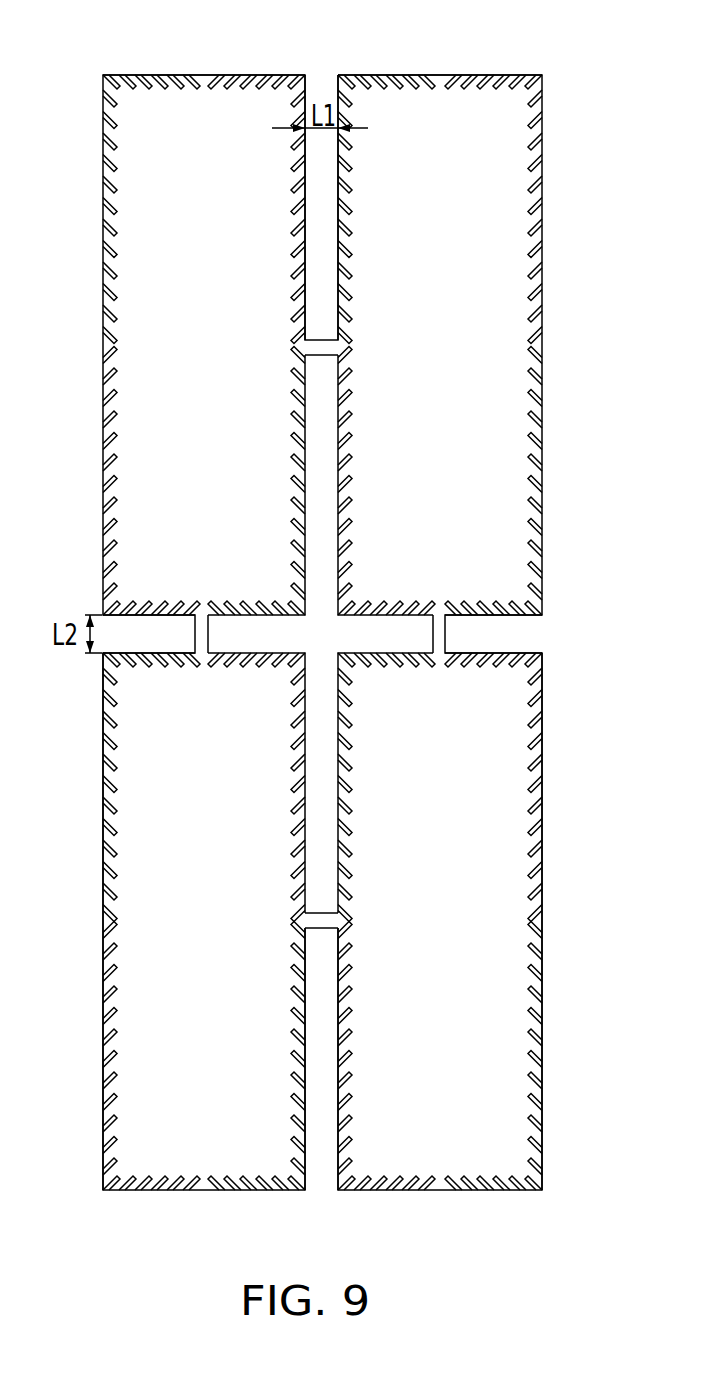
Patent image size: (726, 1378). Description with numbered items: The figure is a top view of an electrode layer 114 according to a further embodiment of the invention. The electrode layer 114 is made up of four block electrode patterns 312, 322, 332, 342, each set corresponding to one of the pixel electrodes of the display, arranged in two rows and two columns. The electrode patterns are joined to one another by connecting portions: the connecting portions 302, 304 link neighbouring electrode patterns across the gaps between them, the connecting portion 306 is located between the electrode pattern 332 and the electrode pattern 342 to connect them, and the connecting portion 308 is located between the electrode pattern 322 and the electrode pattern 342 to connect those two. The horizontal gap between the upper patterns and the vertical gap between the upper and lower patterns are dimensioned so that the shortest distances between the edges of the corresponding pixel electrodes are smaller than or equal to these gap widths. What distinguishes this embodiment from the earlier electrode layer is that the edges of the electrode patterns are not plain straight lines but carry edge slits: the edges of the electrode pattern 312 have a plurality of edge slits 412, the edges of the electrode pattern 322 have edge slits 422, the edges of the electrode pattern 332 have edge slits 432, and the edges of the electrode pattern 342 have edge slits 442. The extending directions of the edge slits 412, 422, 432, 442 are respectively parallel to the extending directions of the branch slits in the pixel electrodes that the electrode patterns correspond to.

The electrode layer 114 is at (325, 632).
The connecting portion 302 is at (320, 340).
The connecting portion 304 is at (197, 631).
The connecting portion 306 is at (320, 928).
The connecting portion 308 is at (446, 628).
The electrode pattern 312 is at (150, 352).
The electrode pattern 322 is at (505, 345).
The electrode pattern 332 is at (120, 820).
The electrode pattern 342 is at (505, 858).
The edge slits 412 is at (247, 73).
The edge slits 422 is at (486, 73).
The edge slits 432 is at (96, 1112).
The edge slits 442 is at (547, 1112).